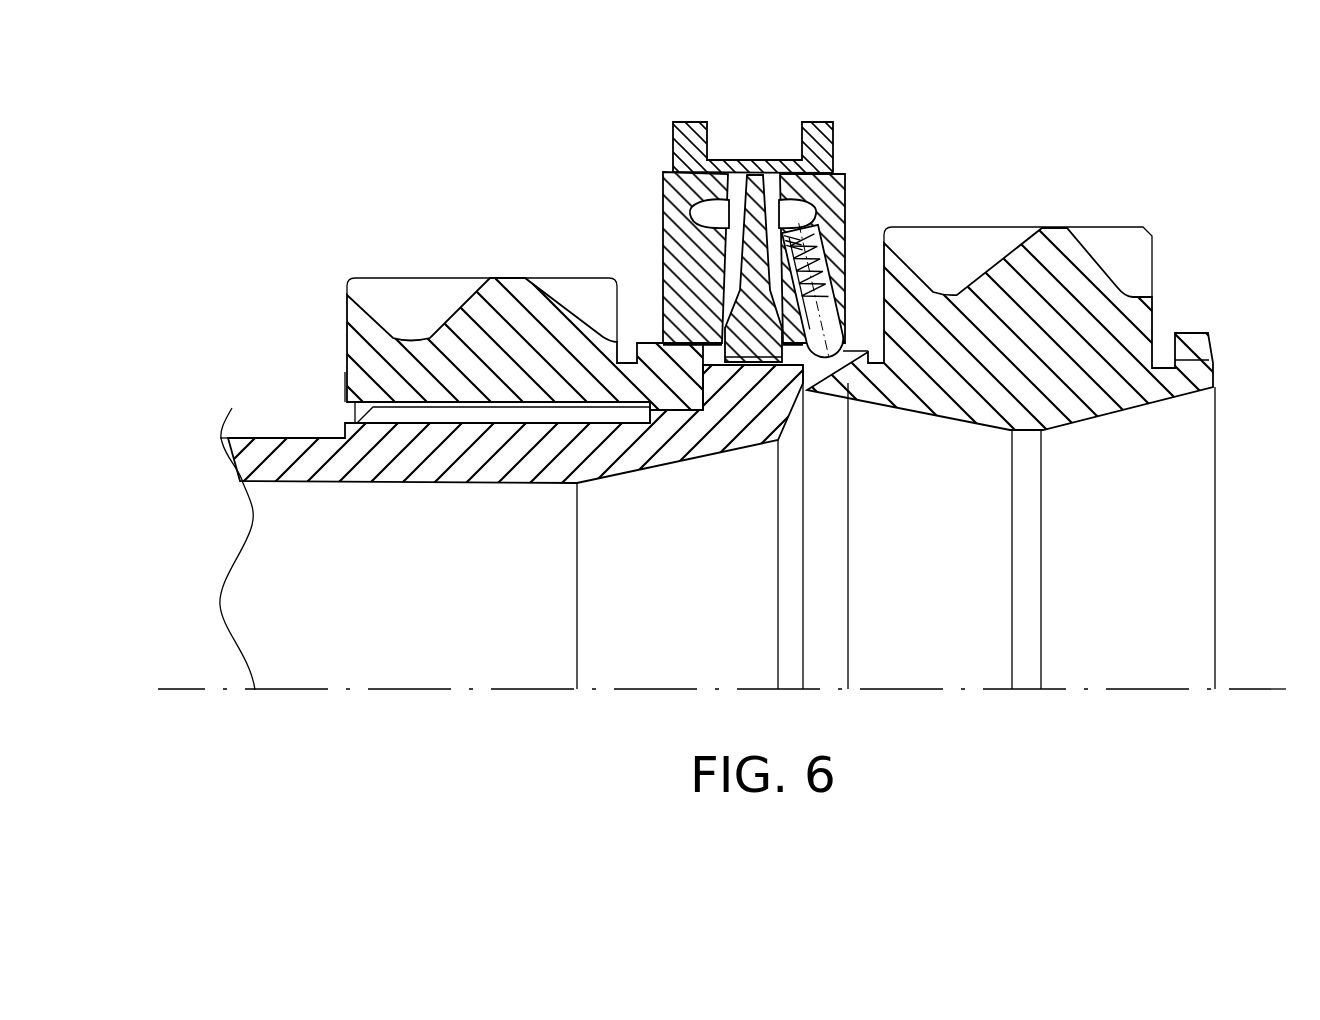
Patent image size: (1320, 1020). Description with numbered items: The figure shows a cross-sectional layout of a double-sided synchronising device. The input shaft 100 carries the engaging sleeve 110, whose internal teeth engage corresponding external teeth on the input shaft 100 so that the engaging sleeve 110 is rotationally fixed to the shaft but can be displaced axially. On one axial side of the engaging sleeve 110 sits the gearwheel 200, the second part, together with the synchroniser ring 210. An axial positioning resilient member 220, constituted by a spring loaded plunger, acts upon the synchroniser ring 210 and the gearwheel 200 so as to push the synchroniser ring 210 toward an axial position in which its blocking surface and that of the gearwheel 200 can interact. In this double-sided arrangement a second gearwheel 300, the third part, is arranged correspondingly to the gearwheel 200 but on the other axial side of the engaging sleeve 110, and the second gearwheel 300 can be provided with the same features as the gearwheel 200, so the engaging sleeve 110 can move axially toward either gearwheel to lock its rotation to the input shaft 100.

The input shaft 100 is at (313, 462).
The second gearwheel 300 is at (517, 320).
The engaging sleeve 110 is at (683, 140).
The synchroniser ring 210 is at (833, 217).
The axial positioning resilient member 220 is at (838, 312).
The gearwheel 200 is at (1083, 290).